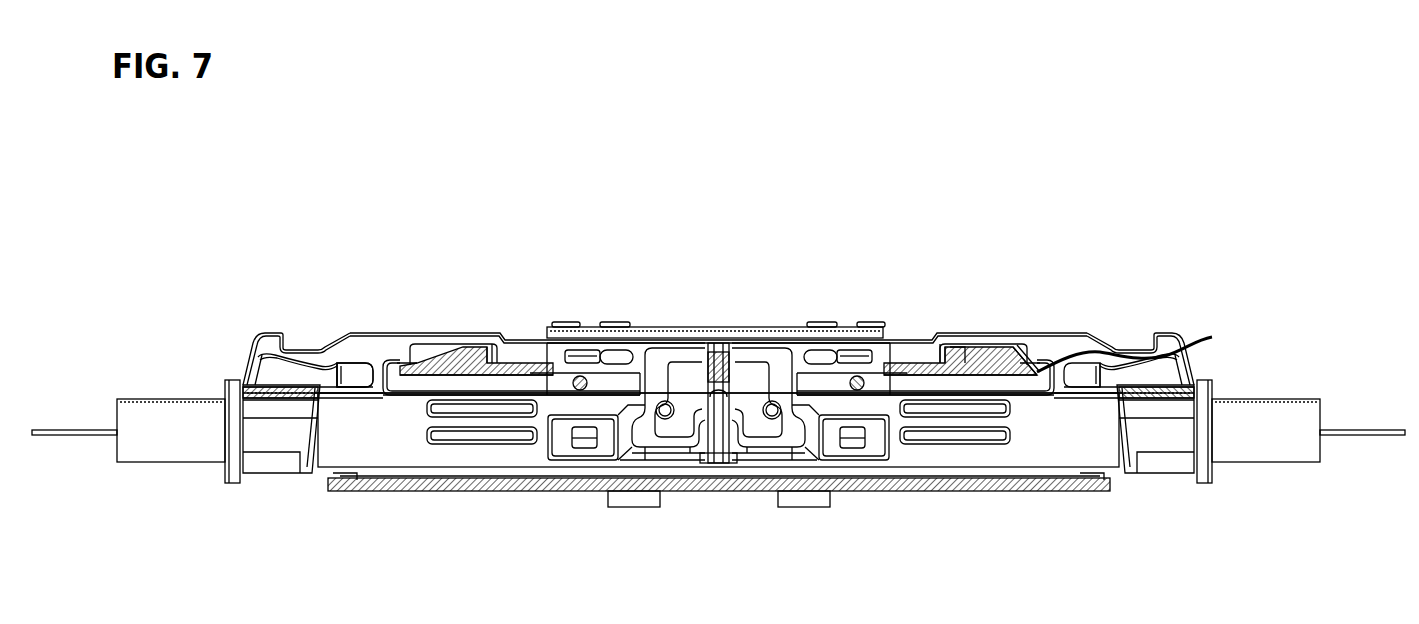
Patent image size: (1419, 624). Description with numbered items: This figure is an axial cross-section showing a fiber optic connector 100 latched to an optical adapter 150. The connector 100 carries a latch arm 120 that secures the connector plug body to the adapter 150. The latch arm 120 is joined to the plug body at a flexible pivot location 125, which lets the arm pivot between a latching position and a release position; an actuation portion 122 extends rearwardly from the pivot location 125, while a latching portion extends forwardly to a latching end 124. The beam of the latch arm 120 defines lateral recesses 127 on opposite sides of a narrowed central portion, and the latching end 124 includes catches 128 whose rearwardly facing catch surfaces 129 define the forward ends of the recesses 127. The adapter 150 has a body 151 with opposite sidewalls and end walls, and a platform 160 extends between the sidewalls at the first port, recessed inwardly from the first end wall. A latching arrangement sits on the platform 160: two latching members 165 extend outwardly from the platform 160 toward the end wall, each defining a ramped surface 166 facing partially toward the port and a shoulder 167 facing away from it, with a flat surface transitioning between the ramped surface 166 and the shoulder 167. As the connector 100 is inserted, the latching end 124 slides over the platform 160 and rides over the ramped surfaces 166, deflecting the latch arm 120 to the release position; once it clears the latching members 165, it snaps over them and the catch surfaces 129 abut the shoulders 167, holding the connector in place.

The fiber optic connector 100 is at (403, 438).
The latch arm 120 is at (392, 313).
The actuation portion 122 is at (302, 345).
The latching end 124 is at (512, 342).
The flexible pivot location 125 is at (375, 356).
The lateral recesses 127 is at (985, 355).
The catches 128 is at (480, 353).
The catch surfaces 129 is at (960, 355).
The optical adapter 150 is at (867, 495).
The body 151 is at (710, 492).
The platform 160 is at (1146, 346).
The latching members 165 is at (447, 353).
The ramped surface 166 is at (1003, 355).
The shoulder 167 is at (950, 355).